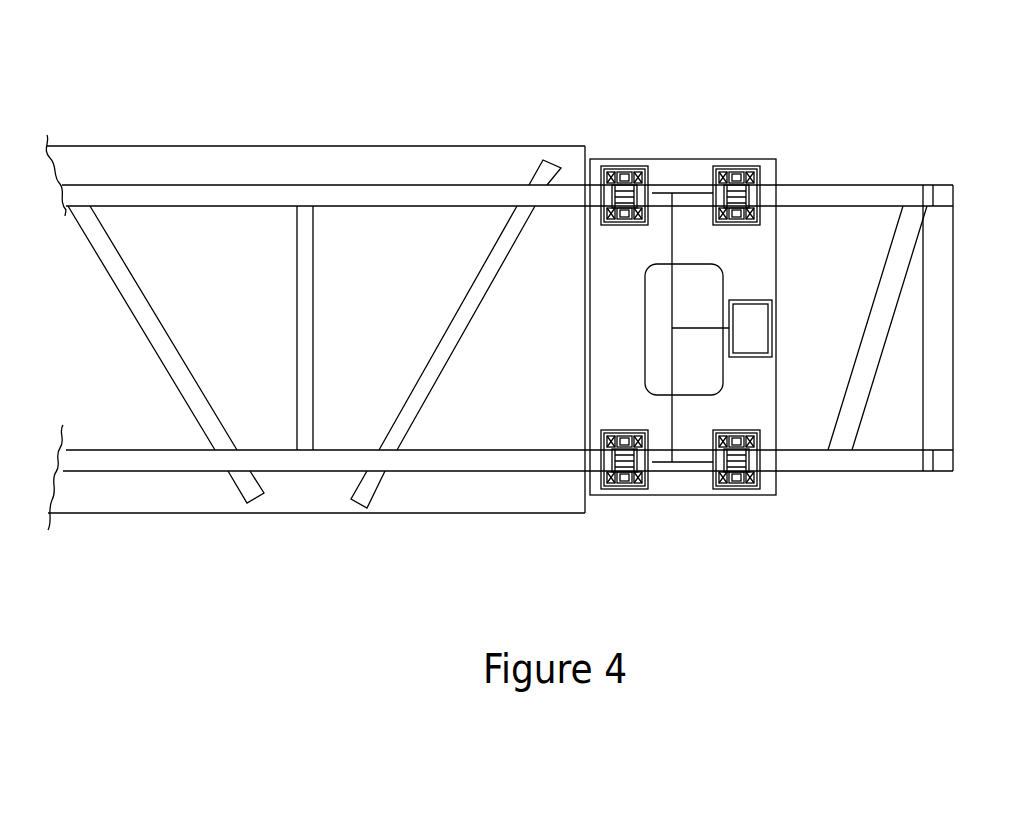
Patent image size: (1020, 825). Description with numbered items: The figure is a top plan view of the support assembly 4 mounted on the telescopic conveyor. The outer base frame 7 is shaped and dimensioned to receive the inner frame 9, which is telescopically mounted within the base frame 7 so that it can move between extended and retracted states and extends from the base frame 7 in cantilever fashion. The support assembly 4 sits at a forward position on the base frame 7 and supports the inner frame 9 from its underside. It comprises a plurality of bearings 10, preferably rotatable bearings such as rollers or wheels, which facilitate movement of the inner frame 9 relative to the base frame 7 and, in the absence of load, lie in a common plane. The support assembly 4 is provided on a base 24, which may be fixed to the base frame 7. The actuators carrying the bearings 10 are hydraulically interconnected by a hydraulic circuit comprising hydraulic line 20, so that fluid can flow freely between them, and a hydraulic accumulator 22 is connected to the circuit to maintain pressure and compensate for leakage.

The first support assembly 4 is at (763, 127).
The outer base frame 7 is at (352, 162).
The inner frame 9 is at (818, 195).
The bearing 10 is at (626, 170).
The hydraulic line 20 is at (675, 253).
The hydraulic accumulator 22 is at (753, 330).
The base 24 is at (677, 228).